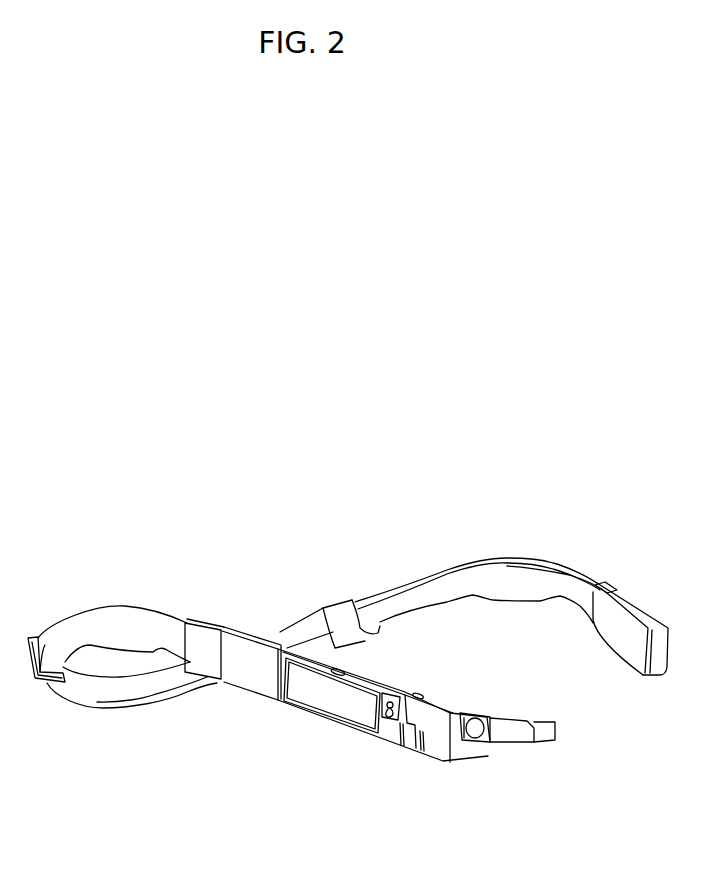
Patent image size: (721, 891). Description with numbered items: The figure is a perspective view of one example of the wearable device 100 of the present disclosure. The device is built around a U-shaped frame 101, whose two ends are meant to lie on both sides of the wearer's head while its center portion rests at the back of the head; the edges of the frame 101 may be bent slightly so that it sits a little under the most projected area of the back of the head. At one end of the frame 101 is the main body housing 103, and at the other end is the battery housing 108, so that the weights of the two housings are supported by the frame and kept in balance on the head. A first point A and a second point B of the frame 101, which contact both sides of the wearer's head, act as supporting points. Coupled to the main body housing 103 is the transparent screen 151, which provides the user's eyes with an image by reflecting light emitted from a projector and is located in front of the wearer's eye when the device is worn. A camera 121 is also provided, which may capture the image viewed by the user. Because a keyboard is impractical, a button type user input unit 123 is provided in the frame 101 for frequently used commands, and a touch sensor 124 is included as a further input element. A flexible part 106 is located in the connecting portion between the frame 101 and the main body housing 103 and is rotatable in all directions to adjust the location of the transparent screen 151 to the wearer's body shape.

The wearable device 100 is at (461, 531).
The frame 101 is at (92, 690).
The flexible part 106 is at (207, 657).
The battery housing 108 is at (625, 617).
The camera 121 is at (477, 733).
The button type user input unit 123 is at (340, 662).
The touch sensor 124 is at (325, 705).
The main body housing 103 is at (388, 725).
The transparent screen 151 is at (547, 740).
The first point A is at (135, 617).
The second point B is at (508, 580).